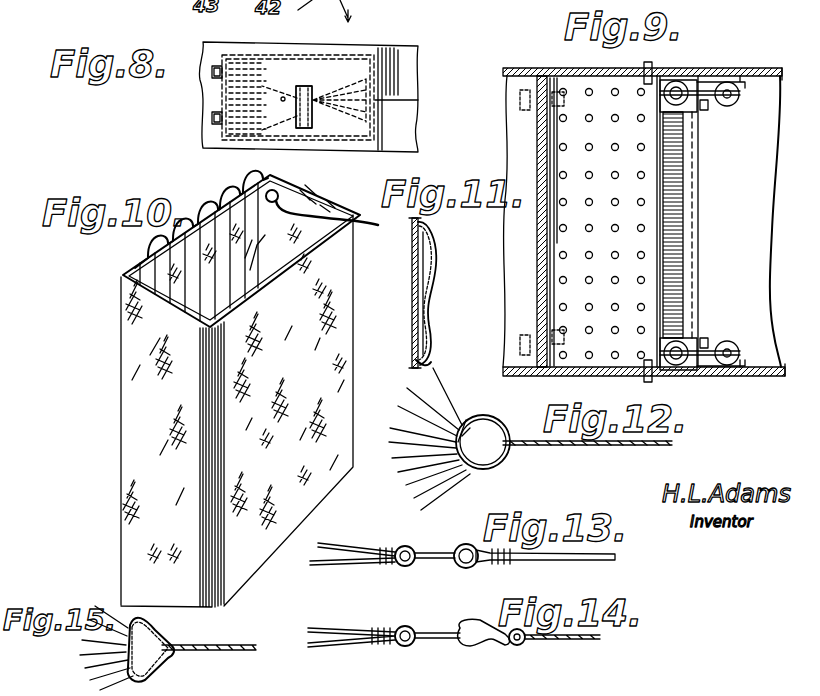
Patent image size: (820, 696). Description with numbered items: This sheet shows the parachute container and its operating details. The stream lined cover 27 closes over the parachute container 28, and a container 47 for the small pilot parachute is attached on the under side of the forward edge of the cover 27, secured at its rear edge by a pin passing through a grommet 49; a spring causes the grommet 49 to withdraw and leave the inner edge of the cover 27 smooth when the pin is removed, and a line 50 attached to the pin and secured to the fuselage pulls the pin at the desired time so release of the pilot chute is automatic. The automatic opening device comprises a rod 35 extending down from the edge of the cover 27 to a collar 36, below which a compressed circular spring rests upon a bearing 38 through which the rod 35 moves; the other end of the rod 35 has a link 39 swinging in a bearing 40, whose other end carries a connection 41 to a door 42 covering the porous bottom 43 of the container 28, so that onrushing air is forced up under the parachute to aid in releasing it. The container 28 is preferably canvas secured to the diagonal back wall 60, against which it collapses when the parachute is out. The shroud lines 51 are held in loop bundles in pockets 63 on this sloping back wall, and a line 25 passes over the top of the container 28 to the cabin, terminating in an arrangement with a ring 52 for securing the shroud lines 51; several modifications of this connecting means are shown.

In FIG. 10, the line 25 is at (380, 228).
In FIG. 12, the line 25 is at (552, 446).
In FIG. 13, the line 25 is at (615, 557).
In FIG. 14, the line 25 is at (558, 642).
In FIG. 15, the line 25 is at (240, 652).
In FIG. 8, the stream lined cover 27 is at (357, 68).
In FIG. 11, the stream lined cover 27 is at (413, 297).
In FIG. 10, the parachute container 28 is at (237, 411).
In FIG. 9, the rod 35 is at (730, 104).
In FIG. 9, the collar 36 is at (740, 94).
In FIG. 9, the bearing 38 is at (752, 80).
In FIG. 9, the link 39 is at (694, 79).
In FIG. 9, the bearing 40 is at (705, 100).
In FIG. 9, the connection 41 is at (660, 92).
In FIG. 9, the door 42 is at (646, 70).
In FIG. 9, the porous bottom 43 is at (640, 193).
In FIG. 8, the container 47 is at (318, 92).
In FIG. 11, the container 47 is at (433, 252).
In FIG. 11, the grommet 49 is at (432, 366).
In FIG. 12, the line 50 is at (420, 378).
In FIG. 10, the shroud lines 51 is at (262, 178).
In FIG. 12, the shroud lines 51 is at (410, 468).
In FIG. 13, the shroud lines 51 is at (352, 544).
In FIG. 14, the shroud lines 51 is at (350, 652).
In FIG. 15, the shroud lines 51 is at (88, 664).
In FIG. 12, the ring 52 is at (495, 465).
In FIG. 13, the ring 52 is at (432, 550).
In FIG. 14, the ring 52 is at (427, 628).
In FIG. 9, the diagonal back wall 60 is at (537, 280).
In FIG. 10, the diagonal back wall 60 is at (122, 278).
In FIG. 10, the pockets 63 is at (150, 262).